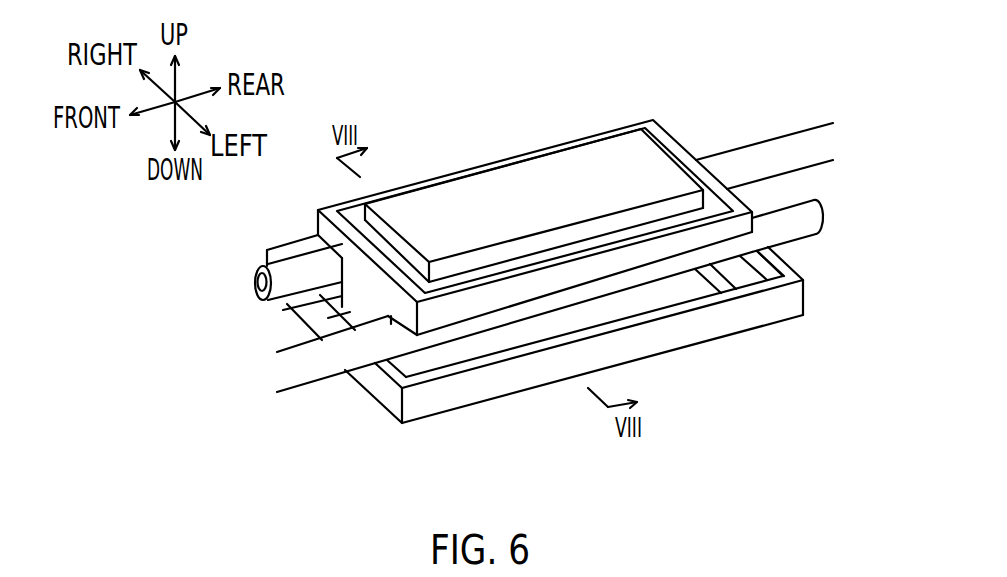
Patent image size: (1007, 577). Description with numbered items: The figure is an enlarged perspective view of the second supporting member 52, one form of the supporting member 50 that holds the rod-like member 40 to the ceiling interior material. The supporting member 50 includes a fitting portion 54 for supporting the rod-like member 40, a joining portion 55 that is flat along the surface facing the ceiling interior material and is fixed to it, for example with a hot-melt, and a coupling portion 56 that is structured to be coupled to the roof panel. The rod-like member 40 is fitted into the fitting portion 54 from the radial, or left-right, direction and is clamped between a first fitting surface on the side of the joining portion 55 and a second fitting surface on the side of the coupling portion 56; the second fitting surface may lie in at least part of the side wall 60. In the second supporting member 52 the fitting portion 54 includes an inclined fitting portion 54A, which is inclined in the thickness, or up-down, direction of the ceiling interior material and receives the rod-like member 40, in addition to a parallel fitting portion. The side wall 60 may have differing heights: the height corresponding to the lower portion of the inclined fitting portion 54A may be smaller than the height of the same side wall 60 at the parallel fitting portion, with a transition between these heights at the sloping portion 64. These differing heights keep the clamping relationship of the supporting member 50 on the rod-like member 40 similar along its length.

The rod-like member 40 is at (792, 148).
The supporting member 50 is at (542, 187).
The second supporting member 52 is at (668, 130).
The fitting portion 54 is at (703, 339).
The inclined fitting portion 54A is at (623, 273).
The joining portion 55 is at (523, 392).
The coupling portion 56 is at (541, 178).
The side wall 60 is at (275, 317).
The sloping portion 64 is at (300, 333).